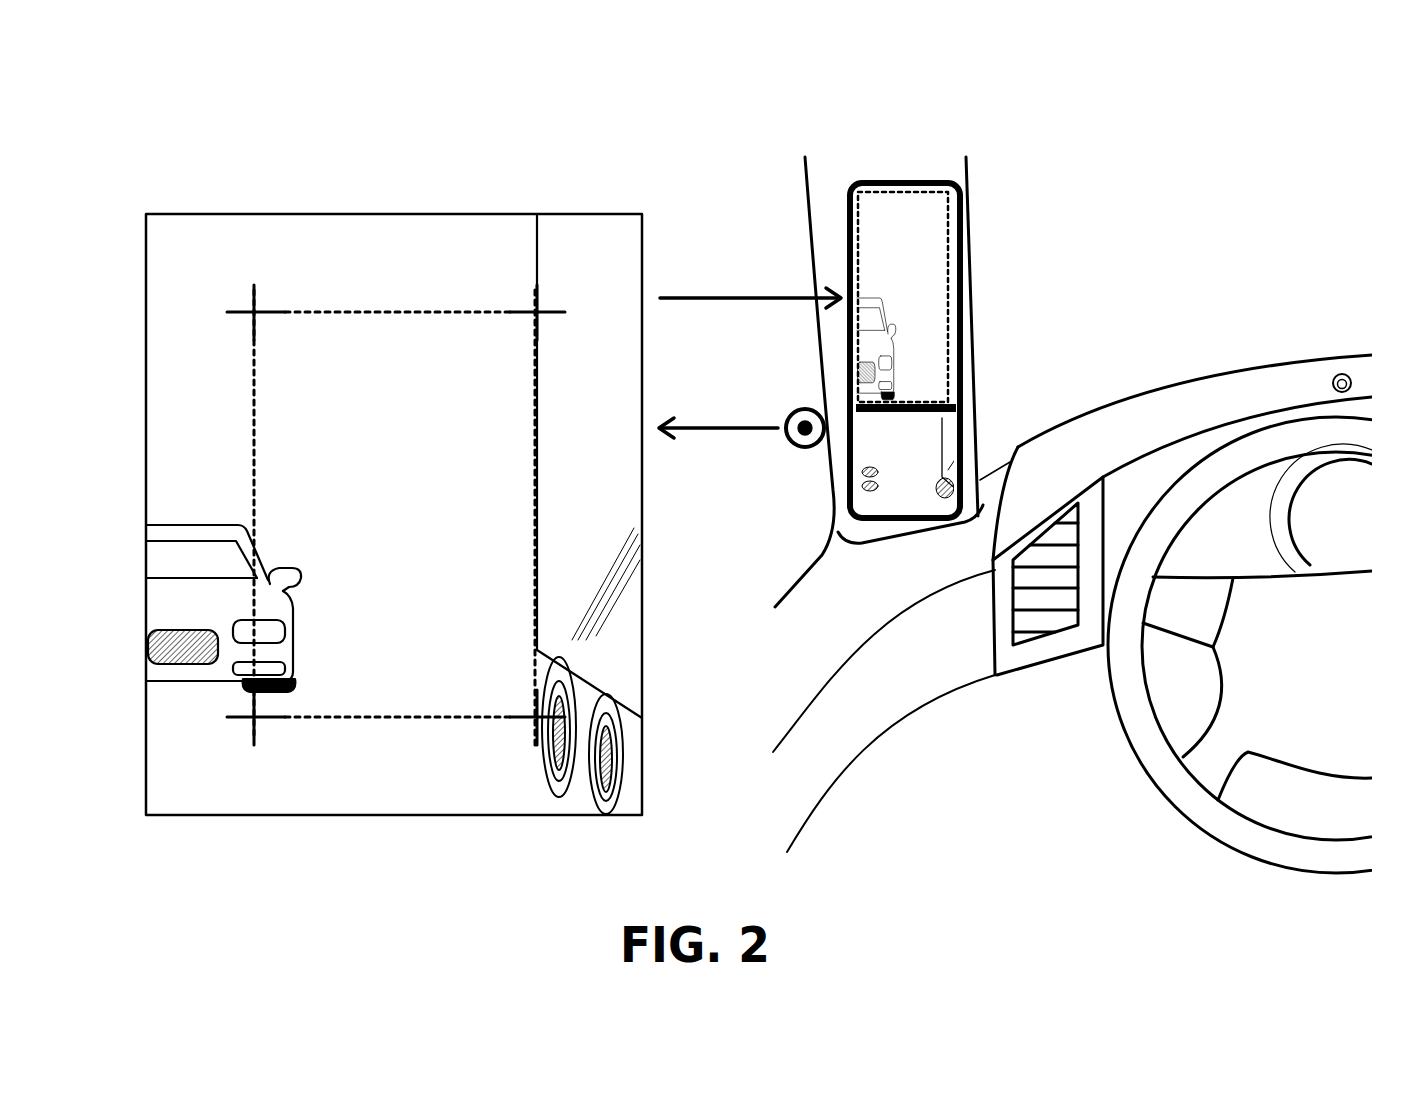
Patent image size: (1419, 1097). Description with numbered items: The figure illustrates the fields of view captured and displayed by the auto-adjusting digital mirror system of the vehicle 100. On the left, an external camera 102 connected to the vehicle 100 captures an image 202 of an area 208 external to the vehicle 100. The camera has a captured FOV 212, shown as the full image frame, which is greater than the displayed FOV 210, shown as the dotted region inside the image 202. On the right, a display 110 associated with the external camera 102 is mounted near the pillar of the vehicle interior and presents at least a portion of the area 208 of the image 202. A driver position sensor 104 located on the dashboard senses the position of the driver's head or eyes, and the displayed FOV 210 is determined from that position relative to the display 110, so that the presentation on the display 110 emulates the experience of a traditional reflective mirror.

The vehicle 100 is at (1349, 104).
The external camera 102 is at (793, 405).
The driver position sensor 104 is at (1338, 375).
The display 110 is at (868, 212).
The image 202 is at (632, 478).
The area 208 is at (255, 226).
The displayed FOV 210 is at (441, 720).
The captured FOV 212 is at (333, 213).